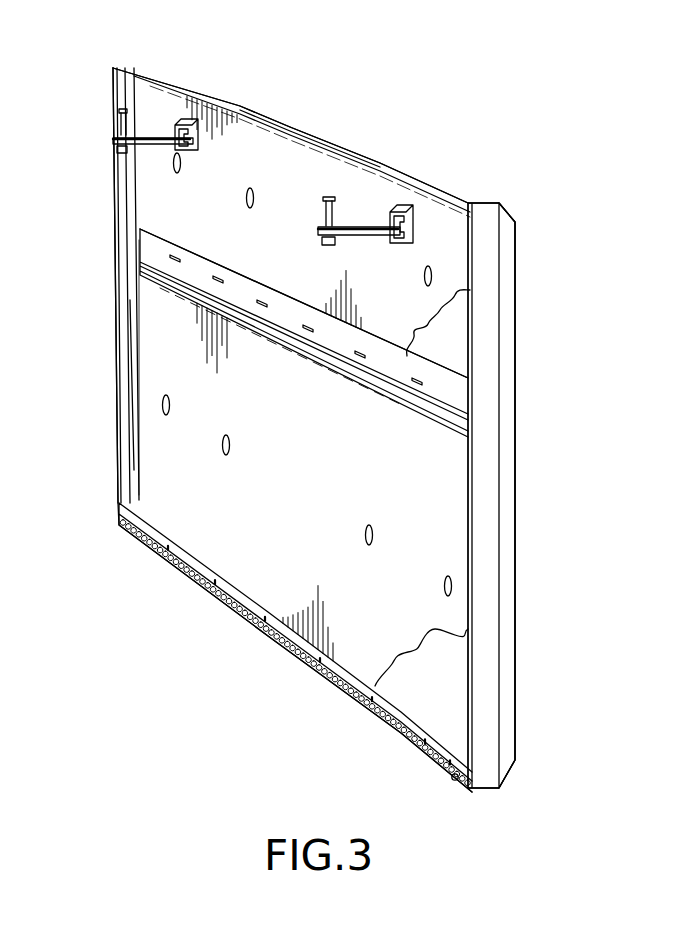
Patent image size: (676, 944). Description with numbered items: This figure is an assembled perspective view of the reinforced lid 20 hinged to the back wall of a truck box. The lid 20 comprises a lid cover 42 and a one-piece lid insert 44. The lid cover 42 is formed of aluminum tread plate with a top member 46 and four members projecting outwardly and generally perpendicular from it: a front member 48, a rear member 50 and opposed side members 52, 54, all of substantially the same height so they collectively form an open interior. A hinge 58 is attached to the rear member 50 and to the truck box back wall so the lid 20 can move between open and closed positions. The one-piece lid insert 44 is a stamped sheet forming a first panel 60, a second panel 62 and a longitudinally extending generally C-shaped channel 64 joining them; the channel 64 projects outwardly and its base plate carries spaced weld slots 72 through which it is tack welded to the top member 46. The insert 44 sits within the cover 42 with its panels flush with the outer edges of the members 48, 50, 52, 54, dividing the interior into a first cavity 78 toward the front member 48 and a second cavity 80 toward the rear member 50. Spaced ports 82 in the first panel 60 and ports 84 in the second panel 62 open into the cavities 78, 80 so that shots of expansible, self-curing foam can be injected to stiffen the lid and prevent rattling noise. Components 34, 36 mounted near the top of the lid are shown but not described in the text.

The reinforced lid 20 is at (550, 158).
The upper mounting bracket 34 is at (163, 133).
The upper mounting bracket 36 is at (367, 226).
The lid cover 42 is at (567, 263).
The one-piece lid insert 44 is at (147, 303).
The top member 46 is at (515, 343).
The front member 48 is at (340, 145).
The rear member 50 is at (462, 776).
The side member 52 is at (113, 96).
The side member 54 is at (487, 471).
The hinge 58 is at (153, 545).
The first panel 60 is at (305, 176).
The second panel 62 is at (152, 462).
The C-shaped channel 64 is at (165, 252).
The weld slots 72 is at (305, 333).
The first cavity 78 is at (450, 348).
The second cavity 80 is at (447, 686).
The ports 82 is at (250, 190).
The ports 84 is at (223, 444).